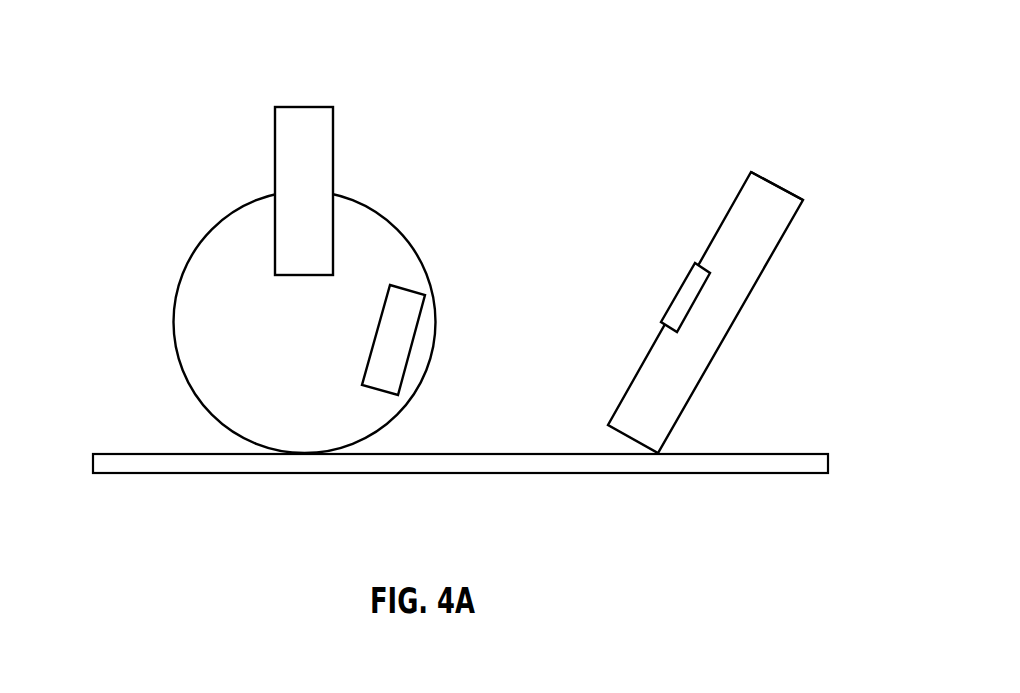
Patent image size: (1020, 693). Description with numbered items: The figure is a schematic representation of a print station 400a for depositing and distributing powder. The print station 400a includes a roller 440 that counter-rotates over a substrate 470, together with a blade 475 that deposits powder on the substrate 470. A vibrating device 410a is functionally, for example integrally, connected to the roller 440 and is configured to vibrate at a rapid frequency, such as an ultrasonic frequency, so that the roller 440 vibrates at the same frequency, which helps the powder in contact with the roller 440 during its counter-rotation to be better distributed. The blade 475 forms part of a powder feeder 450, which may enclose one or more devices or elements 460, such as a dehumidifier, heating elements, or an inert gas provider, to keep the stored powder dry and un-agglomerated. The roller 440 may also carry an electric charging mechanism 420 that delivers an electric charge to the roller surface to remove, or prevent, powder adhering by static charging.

The print station 400a is at (133, 96).
The vibrating device 410a is at (297, 122).
The electric charging mechanism 420 is at (407, 289).
The roller 440 is at (203, 325).
The powder feeder 450 is at (772, 195).
The devices or elements 460 is at (680, 284).
The substrate 470 is at (580, 475).
The blade 475 is at (772, 232).